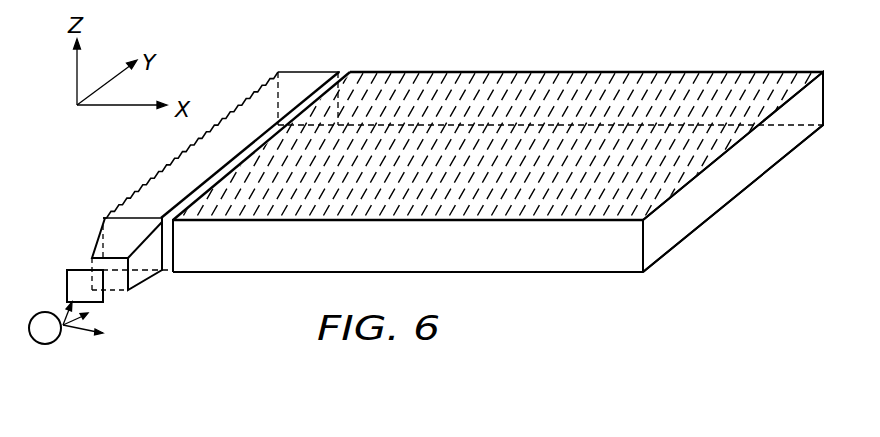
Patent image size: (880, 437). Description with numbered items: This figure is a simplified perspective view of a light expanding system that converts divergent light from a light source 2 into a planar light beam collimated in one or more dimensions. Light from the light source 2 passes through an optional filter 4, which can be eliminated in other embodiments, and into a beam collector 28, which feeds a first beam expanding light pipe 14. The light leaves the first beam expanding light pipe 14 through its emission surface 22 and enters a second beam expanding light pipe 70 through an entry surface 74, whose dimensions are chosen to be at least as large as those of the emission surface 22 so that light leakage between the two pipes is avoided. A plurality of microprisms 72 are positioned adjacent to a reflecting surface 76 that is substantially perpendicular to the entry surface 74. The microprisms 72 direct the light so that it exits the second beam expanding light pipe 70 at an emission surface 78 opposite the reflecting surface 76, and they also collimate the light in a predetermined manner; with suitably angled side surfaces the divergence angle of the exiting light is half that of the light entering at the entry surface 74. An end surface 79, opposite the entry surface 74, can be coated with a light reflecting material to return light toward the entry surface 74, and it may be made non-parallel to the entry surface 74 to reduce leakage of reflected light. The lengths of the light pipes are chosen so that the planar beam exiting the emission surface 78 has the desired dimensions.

The light source 2 is at (66, 345).
The filter 4 is at (100, 303).
The first beam expanding light pipe 14 is at (215, 145).
The emission surface 22 is at (187, 270).
The beam collector 28 is at (144, 287).
The second beam expanding light pipe 70 is at (498, 147).
The microprisms 72 is at (485, 122).
The entry surface 74 is at (261, 121).
The reflecting surface 76 is at (408, 272).
The emission surface 78 is at (408, 306).
The end surface 79 is at (743, 172).